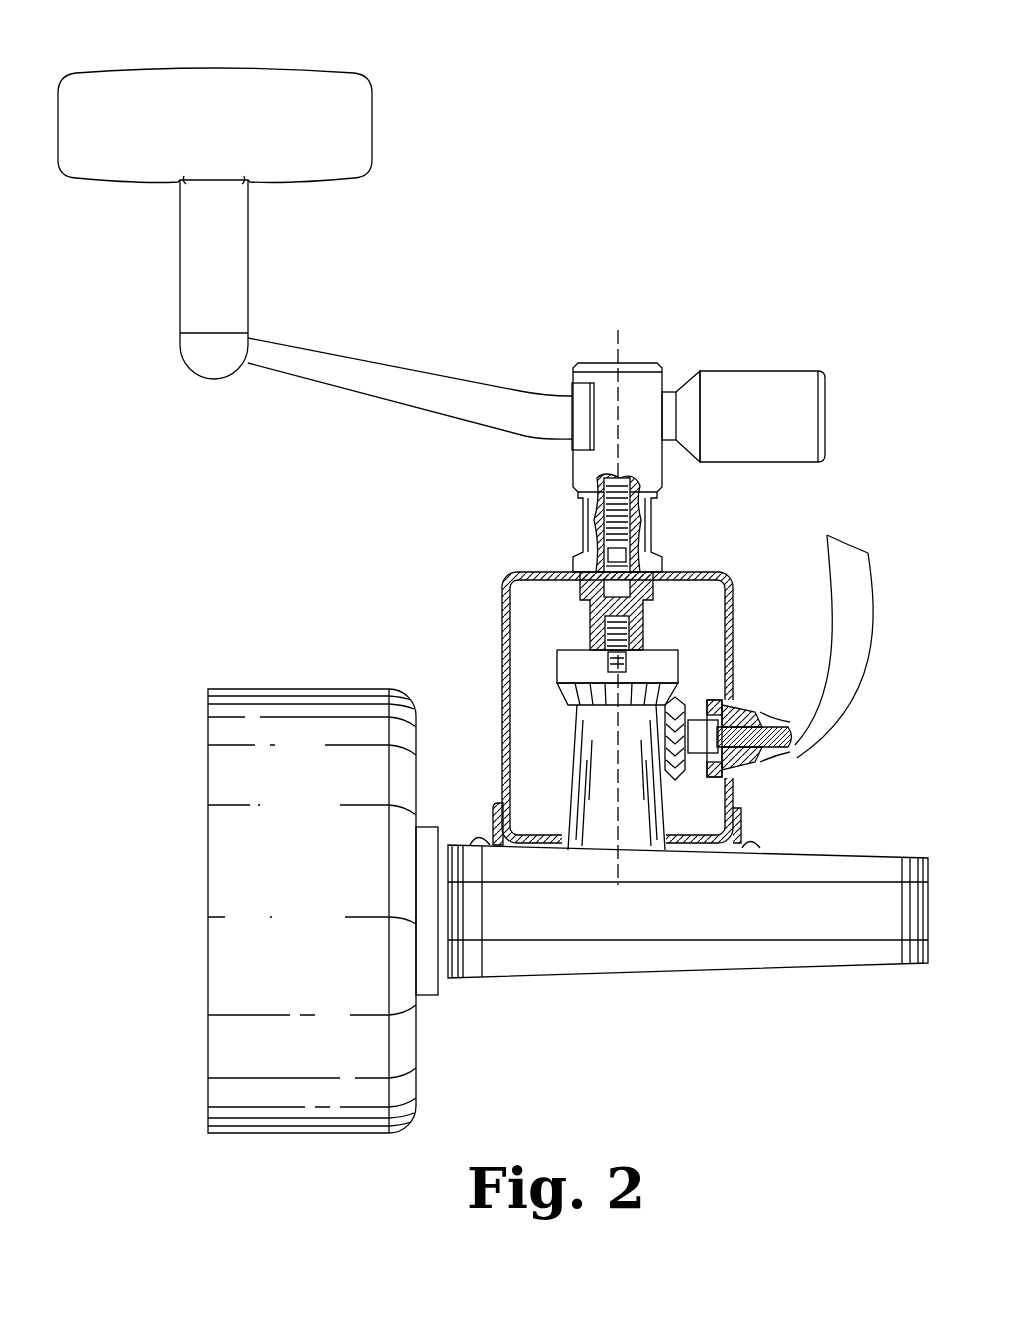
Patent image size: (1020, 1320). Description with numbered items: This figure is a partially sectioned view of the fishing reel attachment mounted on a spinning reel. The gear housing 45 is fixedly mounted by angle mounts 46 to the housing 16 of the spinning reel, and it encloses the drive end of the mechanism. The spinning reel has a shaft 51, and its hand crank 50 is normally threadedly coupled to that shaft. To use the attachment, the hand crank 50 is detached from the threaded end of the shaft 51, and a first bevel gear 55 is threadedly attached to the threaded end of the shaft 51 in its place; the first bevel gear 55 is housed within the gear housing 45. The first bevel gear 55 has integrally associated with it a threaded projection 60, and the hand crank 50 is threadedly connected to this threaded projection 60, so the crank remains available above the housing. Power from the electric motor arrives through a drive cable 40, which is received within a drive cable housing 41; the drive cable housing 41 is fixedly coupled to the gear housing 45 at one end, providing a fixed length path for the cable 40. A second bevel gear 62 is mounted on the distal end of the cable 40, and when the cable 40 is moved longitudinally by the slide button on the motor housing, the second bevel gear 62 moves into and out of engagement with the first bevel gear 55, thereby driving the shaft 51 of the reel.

The housing 16 is at (842, 955).
The drive cable 40 is at (770, 742).
The drive cable housing 41 is at (770, 755).
The gear housing 45 is at (507, 608).
The angle mounts 46 is at (496, 838).
The hand crank 50 is at (292, 93).
The shaft 51 is at (600, 835).
The first bevel gear 55 is at (670, 660).
The threaded projection 60 is at (630, 541).
The second bevel gear 62 is at (682, 702).